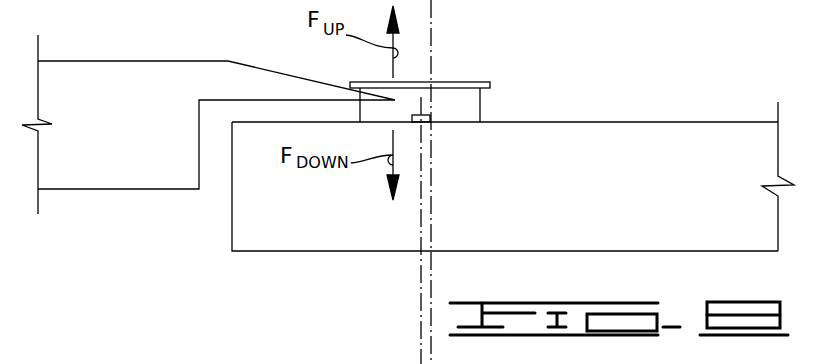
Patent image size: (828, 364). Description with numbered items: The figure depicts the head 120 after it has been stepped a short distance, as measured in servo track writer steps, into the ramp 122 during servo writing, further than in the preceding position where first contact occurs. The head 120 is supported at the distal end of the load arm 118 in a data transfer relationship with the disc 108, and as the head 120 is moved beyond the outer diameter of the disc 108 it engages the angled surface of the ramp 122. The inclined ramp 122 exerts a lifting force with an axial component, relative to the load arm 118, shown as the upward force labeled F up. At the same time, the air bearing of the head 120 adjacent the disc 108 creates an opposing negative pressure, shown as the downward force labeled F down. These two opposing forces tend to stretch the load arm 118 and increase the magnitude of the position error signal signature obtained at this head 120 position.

The storage medium 108 is at (314, 252).
The load arm 118 is at (465, 82).
The head 120 is at (481, 110).
The ramp 122 is at (281, 73).